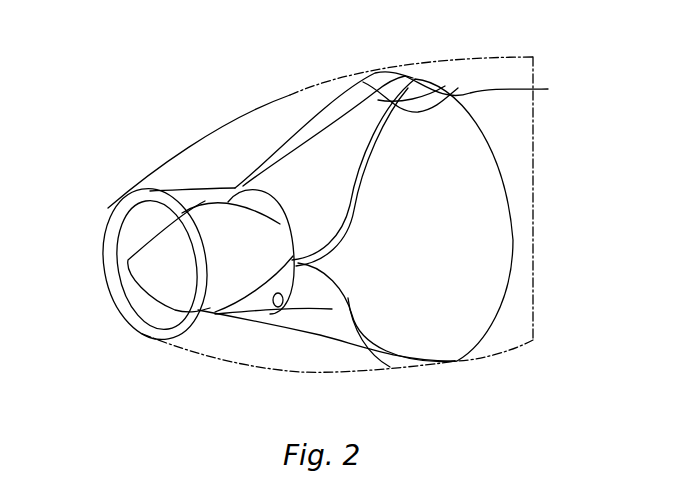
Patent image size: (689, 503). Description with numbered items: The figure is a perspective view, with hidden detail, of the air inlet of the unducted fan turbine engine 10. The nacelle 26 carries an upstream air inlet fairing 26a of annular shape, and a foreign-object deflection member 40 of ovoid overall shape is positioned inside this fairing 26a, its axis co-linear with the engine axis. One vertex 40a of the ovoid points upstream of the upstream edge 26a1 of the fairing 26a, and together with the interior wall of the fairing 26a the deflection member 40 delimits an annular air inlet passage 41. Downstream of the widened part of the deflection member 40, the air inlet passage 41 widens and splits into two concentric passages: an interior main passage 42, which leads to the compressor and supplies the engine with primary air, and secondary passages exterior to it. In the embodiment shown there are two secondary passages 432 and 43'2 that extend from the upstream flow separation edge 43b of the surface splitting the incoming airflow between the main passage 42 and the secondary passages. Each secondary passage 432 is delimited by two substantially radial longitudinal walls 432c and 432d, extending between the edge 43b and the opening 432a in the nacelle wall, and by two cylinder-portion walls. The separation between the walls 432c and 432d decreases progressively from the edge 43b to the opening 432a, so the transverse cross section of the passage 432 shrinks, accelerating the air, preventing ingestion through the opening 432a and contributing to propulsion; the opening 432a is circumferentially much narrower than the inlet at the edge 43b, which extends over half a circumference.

The unducted fan turbine engine 10 is at (463, 377).
The nacelle 26 is at (478, 77).
The air inlet fairing 26a is at (218, 155).
The upstream edge 26a1 is at (108, 208).
The foreign-object deflection member 40 is at (153, 274).
The vertex 40a is at (122, 275).
The air inlet passage 41 is at (218, 313).
The main passage 42 is at (263, 308).
The flow separation edge 43b is at (274, 306).
The secondary passage 43'2 is at (376, 341).
The secondary passage 432 is at (368, 112).
The opening 432a is at (400, 83).
The radial wall 432c is at (327, 120).
The radial wall 432d is at (495, 89).